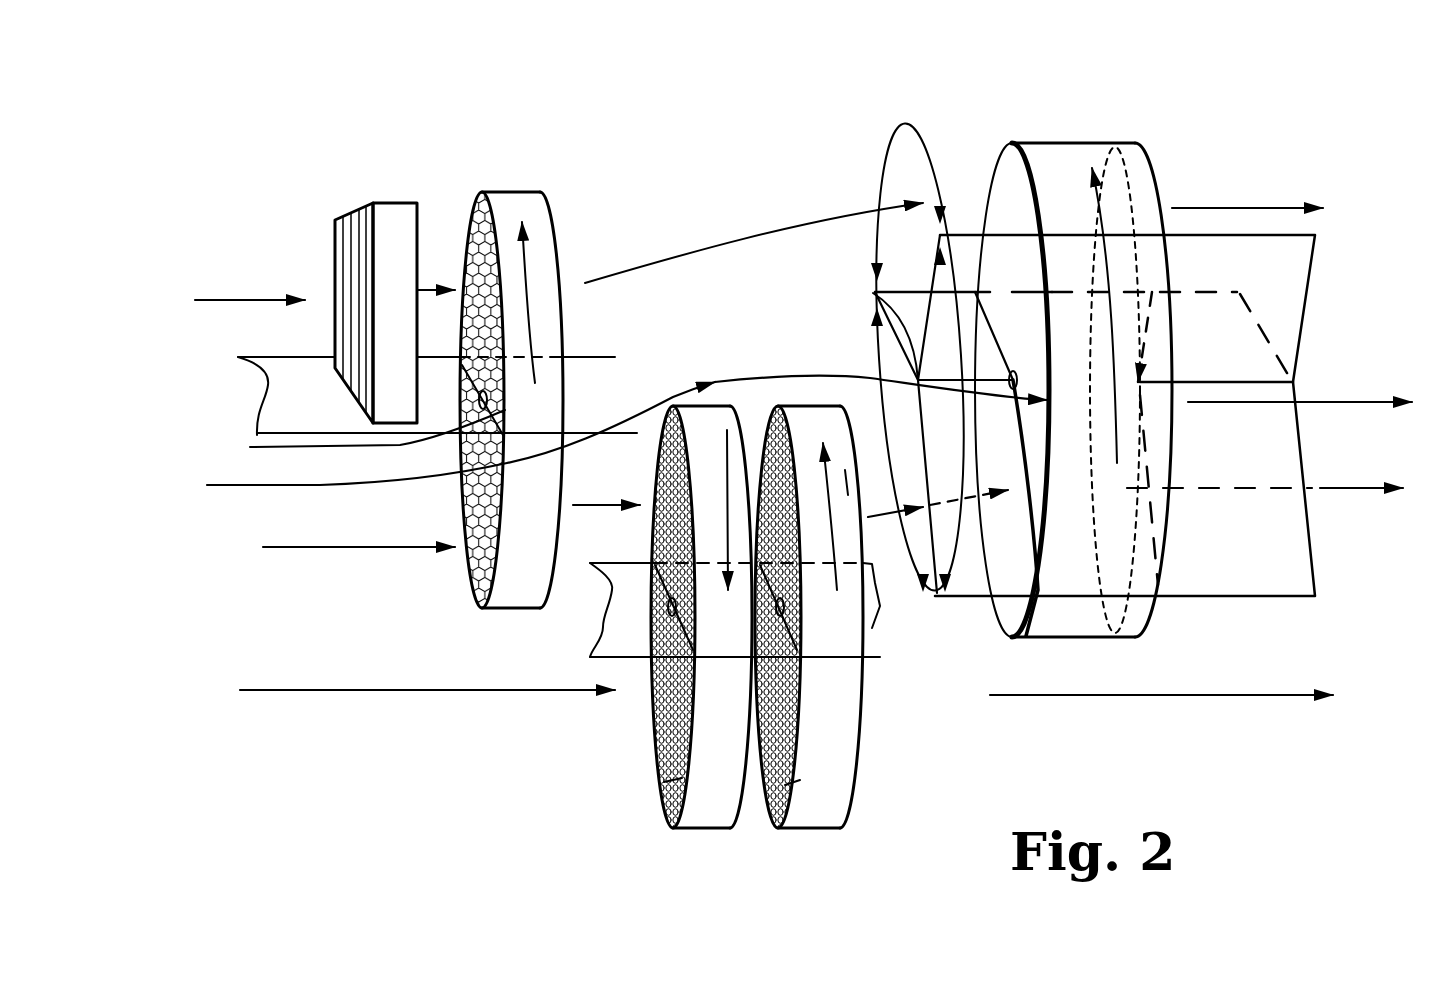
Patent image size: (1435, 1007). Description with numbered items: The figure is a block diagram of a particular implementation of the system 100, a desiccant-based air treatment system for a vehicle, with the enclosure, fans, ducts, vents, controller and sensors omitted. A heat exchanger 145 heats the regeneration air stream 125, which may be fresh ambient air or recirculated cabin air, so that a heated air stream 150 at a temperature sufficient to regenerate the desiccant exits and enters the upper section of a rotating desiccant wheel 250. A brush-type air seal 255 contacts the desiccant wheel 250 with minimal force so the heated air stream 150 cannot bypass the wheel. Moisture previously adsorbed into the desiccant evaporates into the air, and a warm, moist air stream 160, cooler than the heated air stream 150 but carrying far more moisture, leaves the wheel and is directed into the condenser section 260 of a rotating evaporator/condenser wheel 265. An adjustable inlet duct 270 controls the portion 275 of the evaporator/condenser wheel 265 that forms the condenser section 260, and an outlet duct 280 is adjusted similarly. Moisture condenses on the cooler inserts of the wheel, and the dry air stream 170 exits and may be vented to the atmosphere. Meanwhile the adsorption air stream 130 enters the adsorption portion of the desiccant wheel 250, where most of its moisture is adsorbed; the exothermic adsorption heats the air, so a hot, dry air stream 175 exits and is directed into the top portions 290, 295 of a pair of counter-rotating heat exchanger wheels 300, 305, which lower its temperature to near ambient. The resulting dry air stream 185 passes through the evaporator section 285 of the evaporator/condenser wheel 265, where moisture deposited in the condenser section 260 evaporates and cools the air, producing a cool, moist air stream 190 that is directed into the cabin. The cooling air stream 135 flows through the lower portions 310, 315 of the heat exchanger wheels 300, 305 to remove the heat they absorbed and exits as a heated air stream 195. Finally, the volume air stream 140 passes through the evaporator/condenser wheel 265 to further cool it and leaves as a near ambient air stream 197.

The system 100 is at (1300, 137).
The regeneration air stream 125 is at (243, 300).
The adsorption air stream 130 is at (392, 547).
The cooling air stream 135 is at (385, 693).
The volume air stream 140 is at (320, 485).
The heat exchanger 145 is at (356, 216).
The heated air stream 150 is at (430, 290).
The warm, moist air stream 160 is at (790, 232).
The dry air stream 170 is at (1255, 208).
The hot, dry air stream 175 is at (587, 505).
The dry air stream 185 is at (950, 497).
The cool, moist air stream 190 is at (1320, 488).
The heated air stream 195 is at (1190, 695).
The near ambient air stream 197 is at (1333, 402).
The rotating desiccant wheel 250 is at (528, 598).
The brush-type air seal 255 is at (345, 440).
The condenser section 260 is at (1003, 197).
The evaporator/condenser wheel 265 is at (1102, 145).
The adjustable inlet duct 270 is at (875, 293).
The portion of the E/C wheel 275 is at (880, 170).
The outlet duct 280 is at (1310, 322).
The evaporator section 285 is at (1013, 603).
The top portion of heat exchanger wheel 290 is at (735, 483).
The top portion of heat exchanger wheel 295 is at (847, 483).
The heat exchanger wheel 300 is at (677, 837).
The heat exchanger wheel 305 is at (817, 800).
The lower portion of heat exchanger wheel 310 is at (665, 782).
The lower portion of heat exchanger wheel 315 is at (785, 785).